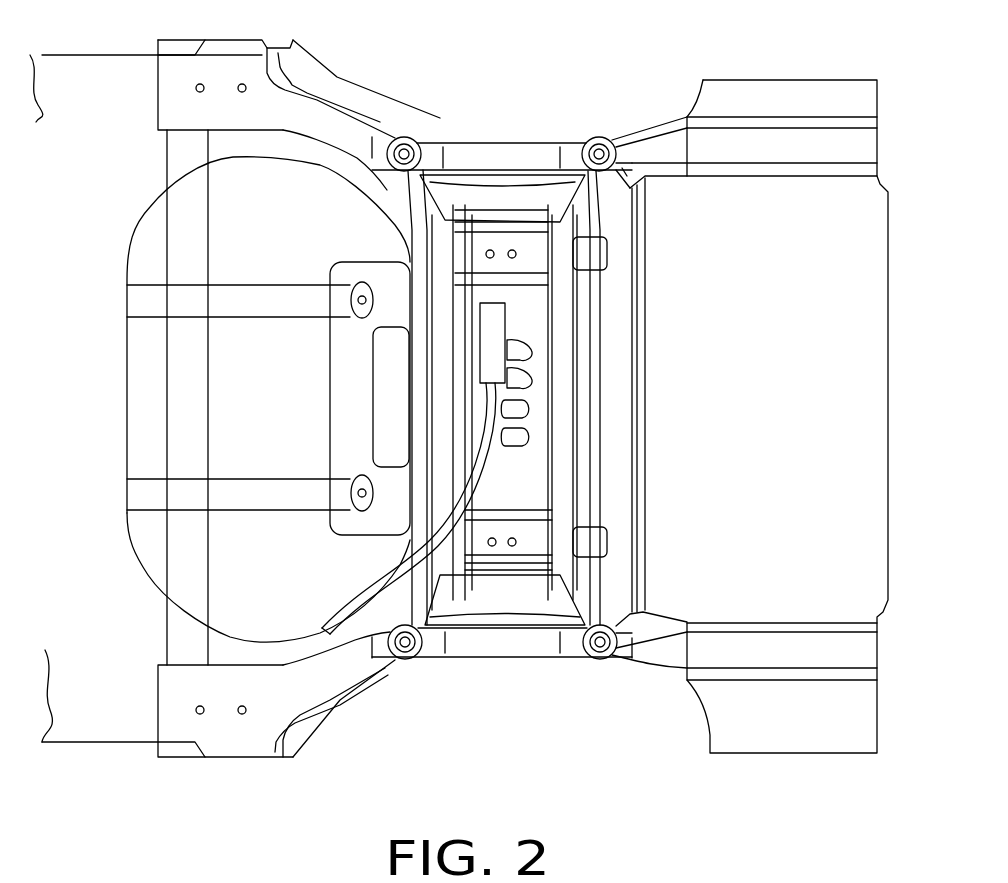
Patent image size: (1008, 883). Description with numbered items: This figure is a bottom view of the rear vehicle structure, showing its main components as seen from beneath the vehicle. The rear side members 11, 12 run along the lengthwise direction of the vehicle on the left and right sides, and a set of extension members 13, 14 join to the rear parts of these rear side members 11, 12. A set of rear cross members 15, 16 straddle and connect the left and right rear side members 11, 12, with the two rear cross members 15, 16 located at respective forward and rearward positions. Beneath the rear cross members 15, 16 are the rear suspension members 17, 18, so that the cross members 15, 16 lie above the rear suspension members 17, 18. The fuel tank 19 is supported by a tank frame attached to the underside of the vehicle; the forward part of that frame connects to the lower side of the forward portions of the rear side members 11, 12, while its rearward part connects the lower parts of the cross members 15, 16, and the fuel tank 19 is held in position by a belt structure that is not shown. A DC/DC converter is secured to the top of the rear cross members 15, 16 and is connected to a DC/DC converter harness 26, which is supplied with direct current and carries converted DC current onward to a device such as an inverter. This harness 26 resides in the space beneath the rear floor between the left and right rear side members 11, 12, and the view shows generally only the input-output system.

The rear side member 11 is at (465, 657).
The rear side member 12 is at (478, 150).
The extension member 13 is at (800, 657).
The extension member 14 is at (775, 133).
The rear cross member 15 is at (384, 165).
The rear cross member 16 is at (622, 173).
The rear suspension member 17 is at (433, 167).
The rear suspension member 18 is at (563, 660).
The fuel tank 19 is at (127, 382).
The DC/DC converter harness 26 is at (500, 313).